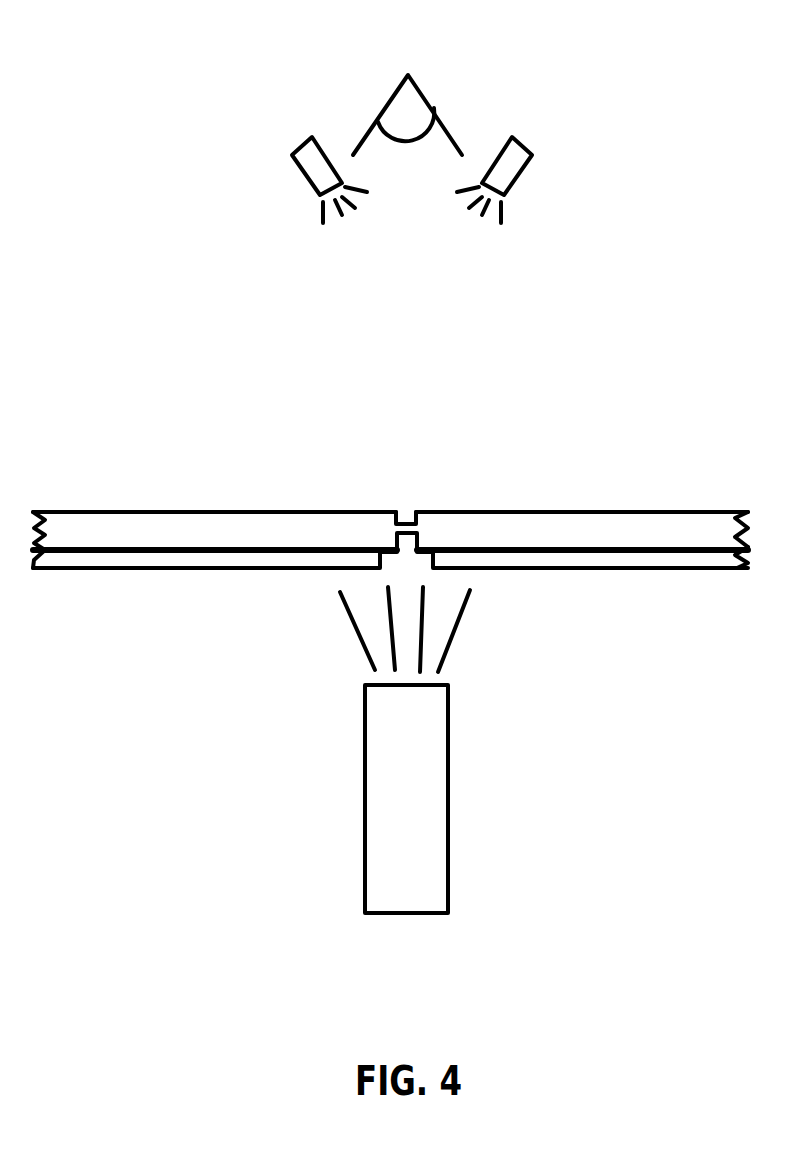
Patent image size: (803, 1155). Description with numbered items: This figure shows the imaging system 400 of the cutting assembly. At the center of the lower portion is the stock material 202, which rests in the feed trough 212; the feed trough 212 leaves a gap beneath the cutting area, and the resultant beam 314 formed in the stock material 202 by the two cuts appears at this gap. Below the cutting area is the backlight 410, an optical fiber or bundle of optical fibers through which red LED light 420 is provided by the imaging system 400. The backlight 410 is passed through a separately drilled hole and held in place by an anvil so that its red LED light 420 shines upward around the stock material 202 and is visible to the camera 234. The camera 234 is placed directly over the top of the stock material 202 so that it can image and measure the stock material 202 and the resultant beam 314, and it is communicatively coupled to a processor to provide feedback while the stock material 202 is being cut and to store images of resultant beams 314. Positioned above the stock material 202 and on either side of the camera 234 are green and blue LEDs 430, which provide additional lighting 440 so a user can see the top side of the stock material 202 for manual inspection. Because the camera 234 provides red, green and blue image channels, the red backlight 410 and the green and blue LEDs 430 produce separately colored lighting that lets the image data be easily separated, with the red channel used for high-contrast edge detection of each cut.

The imaging system 400 is at (267, 105).
The camera 234 is at (435, 103).
The green and blue LEDs 430 is at (300, 163).
The additional lighting 440 is at (320, 217).
The stock material 202 is at (523, 533).
The feed trough 212 is at (140, 558).
The resultant beam 314 is at (407, 509).
The backlight 410 is at (373, 800).
The red LED light 420 is at (372, 667).